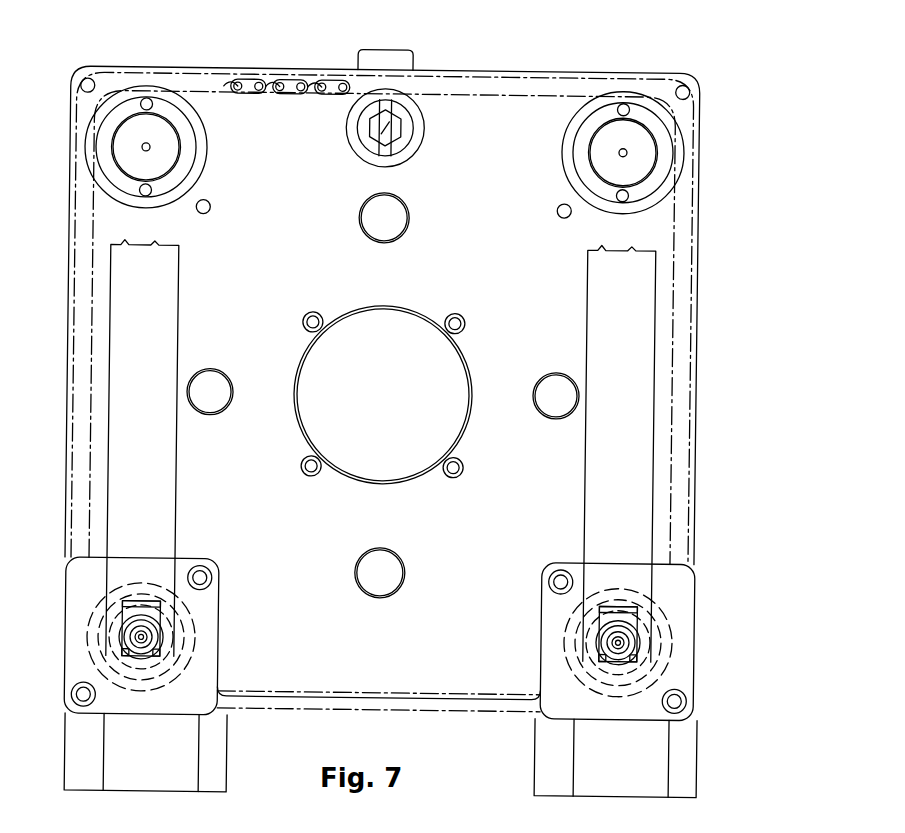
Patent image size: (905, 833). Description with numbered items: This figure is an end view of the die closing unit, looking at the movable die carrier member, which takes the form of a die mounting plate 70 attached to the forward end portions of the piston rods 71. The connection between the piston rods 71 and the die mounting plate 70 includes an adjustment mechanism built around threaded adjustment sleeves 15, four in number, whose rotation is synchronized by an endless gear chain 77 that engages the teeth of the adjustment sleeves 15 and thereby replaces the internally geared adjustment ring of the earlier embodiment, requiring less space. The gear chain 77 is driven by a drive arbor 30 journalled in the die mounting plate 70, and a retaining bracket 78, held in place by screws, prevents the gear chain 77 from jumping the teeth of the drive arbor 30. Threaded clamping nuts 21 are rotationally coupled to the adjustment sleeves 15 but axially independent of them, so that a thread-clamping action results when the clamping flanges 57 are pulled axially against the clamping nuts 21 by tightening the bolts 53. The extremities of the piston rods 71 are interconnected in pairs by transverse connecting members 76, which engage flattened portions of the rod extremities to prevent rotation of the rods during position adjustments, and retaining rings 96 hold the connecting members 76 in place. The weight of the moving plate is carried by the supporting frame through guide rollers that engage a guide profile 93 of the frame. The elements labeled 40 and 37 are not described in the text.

The die mounting plate 70 is at (562, 240).
The retaining bracket 78 is at (398, 60).
The endless gear chain 77 is at (271, 92).
The bushing 40 is at (400, 128).
The drive arbor 30 is at (402, 146).
The hexagonal nut 37 is at (372, 128).
The threaded adjustment sleeve 15 is at (183, 190).
The piston rod 71 is at (168, 146).
The guide profile 93 is at (440, 413).
The transverse connecting member 76 is at (158, 488).
The clamping flange 57 is at (208, 600).
The bolt 53 is at (213, 574).
The retaining ring 96 is at (163, 646).
The threaded clamping nut 21 is at (578, 637).